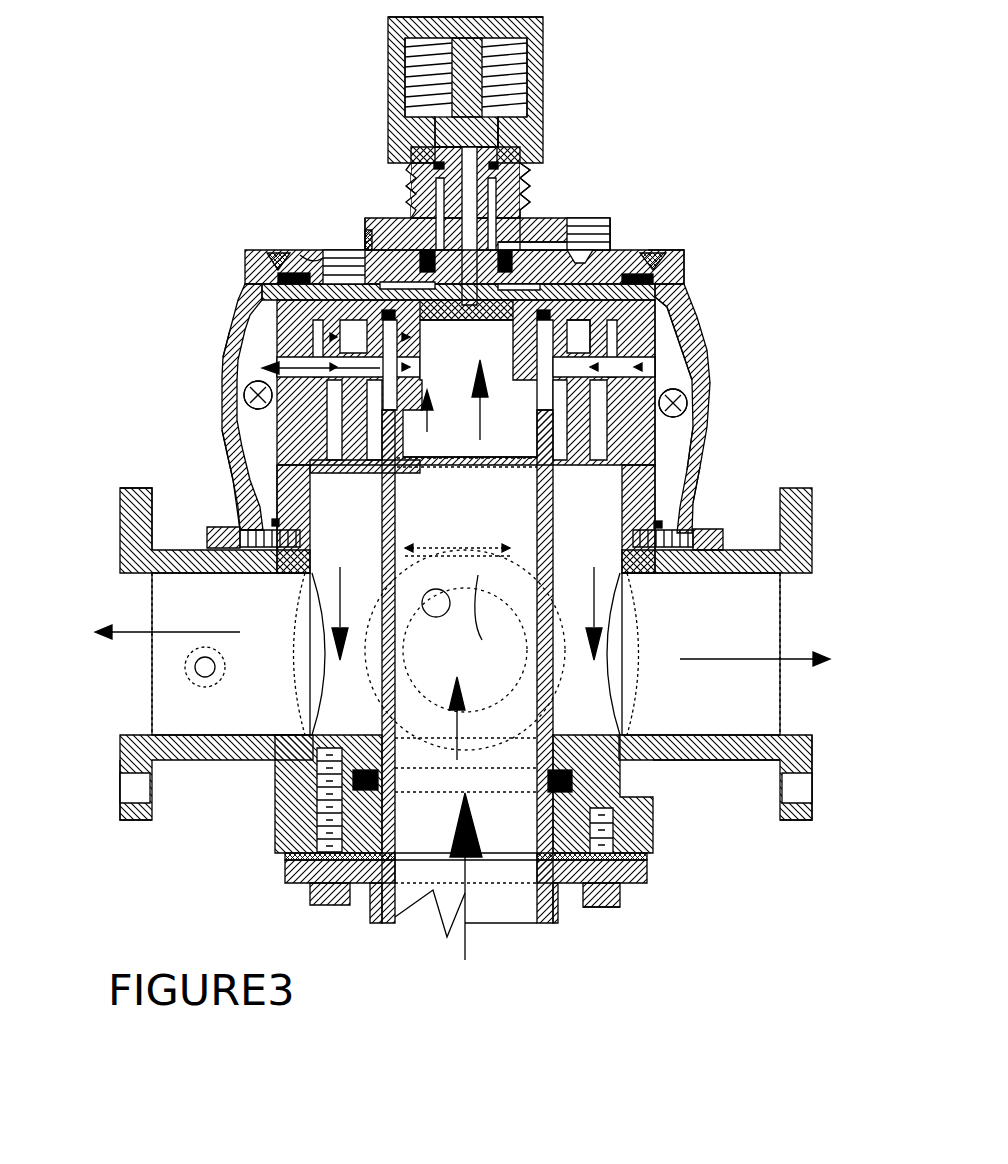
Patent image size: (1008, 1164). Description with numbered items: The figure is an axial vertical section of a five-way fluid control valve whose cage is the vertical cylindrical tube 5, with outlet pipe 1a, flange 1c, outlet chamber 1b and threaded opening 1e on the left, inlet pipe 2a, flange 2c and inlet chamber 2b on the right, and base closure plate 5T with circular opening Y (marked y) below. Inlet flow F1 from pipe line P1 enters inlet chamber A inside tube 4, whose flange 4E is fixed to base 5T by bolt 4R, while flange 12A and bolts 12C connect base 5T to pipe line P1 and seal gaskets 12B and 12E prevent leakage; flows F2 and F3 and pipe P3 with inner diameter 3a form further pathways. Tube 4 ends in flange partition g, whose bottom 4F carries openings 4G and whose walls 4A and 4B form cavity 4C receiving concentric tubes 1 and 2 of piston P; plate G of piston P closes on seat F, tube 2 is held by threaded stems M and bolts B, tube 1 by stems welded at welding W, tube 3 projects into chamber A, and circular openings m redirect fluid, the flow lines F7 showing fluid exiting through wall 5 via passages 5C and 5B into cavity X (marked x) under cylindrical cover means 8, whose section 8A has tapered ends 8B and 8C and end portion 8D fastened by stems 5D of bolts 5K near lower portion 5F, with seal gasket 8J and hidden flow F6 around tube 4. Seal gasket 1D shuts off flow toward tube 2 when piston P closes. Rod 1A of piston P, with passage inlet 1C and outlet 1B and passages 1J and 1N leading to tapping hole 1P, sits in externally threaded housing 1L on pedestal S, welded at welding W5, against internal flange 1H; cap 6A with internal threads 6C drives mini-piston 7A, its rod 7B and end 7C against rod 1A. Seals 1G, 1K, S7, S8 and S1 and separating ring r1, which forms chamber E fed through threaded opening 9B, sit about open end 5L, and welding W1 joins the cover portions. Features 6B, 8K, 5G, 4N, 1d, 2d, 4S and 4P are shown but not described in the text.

The cap 6A is at (402, 50).
The internal threads of cap 6C is at (408, 66).
The cap bore 6B is at (408, 92).
The rod of mini-piston 7B is at (484, 76).
The rod end of mini-piston 7C is at (520, 20).
The mini-piston 7A is at (498, 114).
The piston rod 1A is at (492, 144).
The internal flange of housing 1H is at (420, 142).
The concentric tube 1 is at (465, 265).
The inlet of tubular passage 1C is at (469, 251).
The seal gasket 1D is at (466, 270).
The outlet of tubular passage 1B is at (528, 200).
The threaded tapping hole 1P is at (585, 238).
The tubular passage 1J is at (523, 210).
The tubular passage 1N is at (525, 232).
The bolts B is at (596, 228).
The welding W5 is at (612, 243).
The pedestal S is at (408, 240).
The seal gasket 1G is at (420, 178).
The externally threaded cylindrical housing 1L is at (407, 192).
The seal gasket 1K is at (378, 250).
The threaded opening 9B is at (345, 250).
The piston P is at (335, 257).
The separating ring r1 is at (300, 256).
The seal gasket S8 is at (272, 268).
The seal S7 is at (275, 258).
The seal gasket S1 is at (592, 262).
The welding W is at (280, 278).
The welding W1 is at (652, 278).
The housing corner 8K is at (690, 256).
The cylindrical section of cover 8A is at (230, 400).
The tapered end portion 8B is at (223, 432).
The tapered end portion 8C is at (232, 342).
The open end of tube 5L is at (662, 293).
The housing inner wall 5G is at (695, 350).
The inlet openings 5C is at (704, 430).
The cylindrical cover means 8 is at (700, 480).
The end portion of cover 8D is at (236, 512).
The seal gasket 8J is at (692, 538).
The bolts 5K is at (222, 536).
The vertical cylindrical tube 5 is at (624, 524).
The outlet openings 5B is at (352, 540).
The concentric tube 2 is at (486, 354).
The integrally threaded stems M is at (577, 337).
The flat plate of piston G is at (466, 343).
The seat F is at (462, 404).
The circular tube 3 is at (419, 415).
The cylindrical cavity 4C is at (470, 436).
The flow lines F7 is at (256, 362).
The chamber E is at (663, 382).
The circular openings m is at (673, 389).
The flange partition g is at (300, 418).
The cylindrical cavity x is at (666, 410).
The vertical cylindrical tube 4 is at (393, 605).
The openings 4G is at (467, 477).
The bottom of flange 4F is at (457, 509).
The cylindrical wall 4B is at (410, 548).
The hidden flow F6 is at (466, 548).
The cylindrical wall 4A is at (306, 520).
The downward flow arrow 4N is at (358, 600).
The lower portion 5F is at (626, 540).
The bolt stems 5D is at (288, 572).
The inlet chamber A is at (465, 650).
The pipe P3 is at (467, 697).
The inner diameter of pipe 3a is at (506, 722).
The outlet pipe 1a is at (184, 568).
The outlet chamber 1b is at (152, 650).
The flange 1c is at (124, 536).
The left port bottom flange 1d is at (124, 790).
The threaded opening 1e is at (205, 678).
The flow pathway F3 is at (140, 632).
The inlet pipe 2a is at (702, 736).
The inlet chamber 2b is at (776, 635).
The flange 2c is at (800, 828).
The right port flange step 2d is at (808, 796).
The flow pathway F2 is at (777, 659).
The seal gasket 12E is at (300, 845).
The flange 12A is at (292, 862).
The bolt 4R is at (312, 906).
The bolts 12C is at (605, 908).
The pipe line P1 is at (556, 925).
The threaded bore 4S is at (325, 798).
The base closure plate 5T is at (648, 838).
The flange of tube 4E is at (640, 772).
The seal gasket 12B is at (650, 867).
The tube dashed lines 4P is at (398, 762).
The inlet flow F1 is at (474, 890).
The circular opening y is at (462, 927).